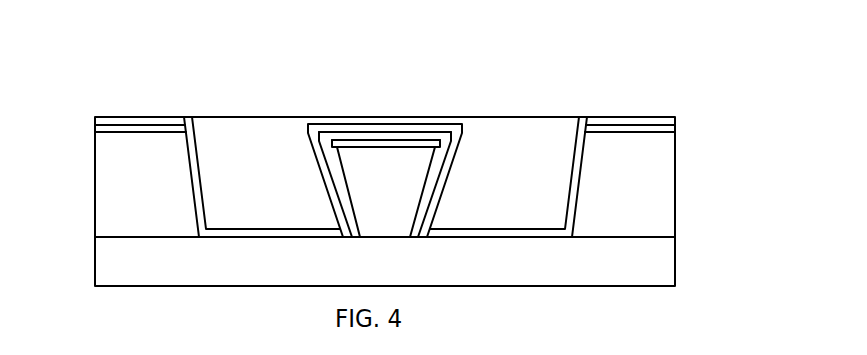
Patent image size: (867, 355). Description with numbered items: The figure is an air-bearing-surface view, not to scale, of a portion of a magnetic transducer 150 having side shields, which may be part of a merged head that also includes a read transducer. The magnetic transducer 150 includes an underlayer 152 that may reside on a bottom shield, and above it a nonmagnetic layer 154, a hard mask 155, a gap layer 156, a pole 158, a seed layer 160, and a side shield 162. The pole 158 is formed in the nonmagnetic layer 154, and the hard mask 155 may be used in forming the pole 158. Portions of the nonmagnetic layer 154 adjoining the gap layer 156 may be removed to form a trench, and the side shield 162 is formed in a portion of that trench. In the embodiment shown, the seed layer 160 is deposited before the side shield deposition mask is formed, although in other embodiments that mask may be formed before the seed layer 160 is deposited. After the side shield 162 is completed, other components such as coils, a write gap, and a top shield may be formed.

The magnetic transducer 150 is at (350, 38).
The underlayer 152 is at (95, 269).
The nonmagnetic layer 154 is at (95, 193).
The hard mask 155 is at (143, 109).
The gap layer 156 is at (334, 164).
The pole 158 is at (369, 141).
The seed layer 160 is at (379, 128).
The side shield 162 is at (522, 117).